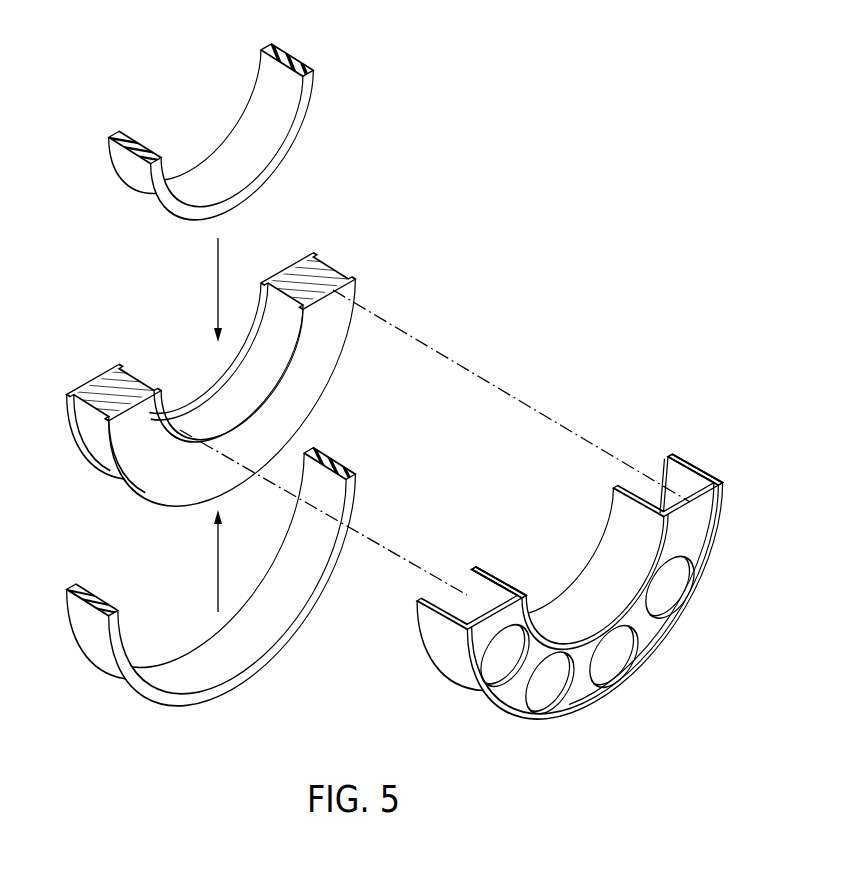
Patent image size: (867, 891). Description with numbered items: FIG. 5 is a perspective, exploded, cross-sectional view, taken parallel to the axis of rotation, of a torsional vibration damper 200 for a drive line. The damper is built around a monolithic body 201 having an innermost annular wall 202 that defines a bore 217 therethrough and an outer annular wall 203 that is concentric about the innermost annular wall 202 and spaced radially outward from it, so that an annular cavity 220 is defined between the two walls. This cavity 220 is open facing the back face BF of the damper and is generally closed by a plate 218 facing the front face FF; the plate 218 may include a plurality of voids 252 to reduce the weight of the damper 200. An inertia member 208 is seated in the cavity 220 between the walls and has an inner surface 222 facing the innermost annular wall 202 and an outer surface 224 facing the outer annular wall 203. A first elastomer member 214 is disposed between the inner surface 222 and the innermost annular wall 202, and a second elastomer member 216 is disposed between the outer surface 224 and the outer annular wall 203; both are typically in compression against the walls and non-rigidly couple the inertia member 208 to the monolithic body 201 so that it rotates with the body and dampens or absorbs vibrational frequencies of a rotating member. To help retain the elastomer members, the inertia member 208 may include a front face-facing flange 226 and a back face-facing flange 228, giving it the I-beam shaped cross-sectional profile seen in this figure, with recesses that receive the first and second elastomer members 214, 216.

The torsional vibration damper 200 is at (557, 172).
The monolithic body 201 is at (580, 611).
The innermost annular wall 202 is at (499, 570).
The outer annular wall 203 is at (702, 465).
The inertia member 208 is at (207, 394).
The first elastomer member 214 is at (121, 169).
The second elastomer member 216 is at (78, 627).
The bore 217 is at (570, 592).
The plate 218 is at (512, 703).
The annular cavity 220 is at (667, 476).
The inner surface 222 is at (120, 365).
The outer surface 224 is at (104, 430).
The front face-facing flange 226 is at (163, 391).
The back face-facing flange 228 is at (64, 395).
The voids 252 is at (641, 666).
The back face BF is at (603, 520).
The front face FF is at (658, 636).